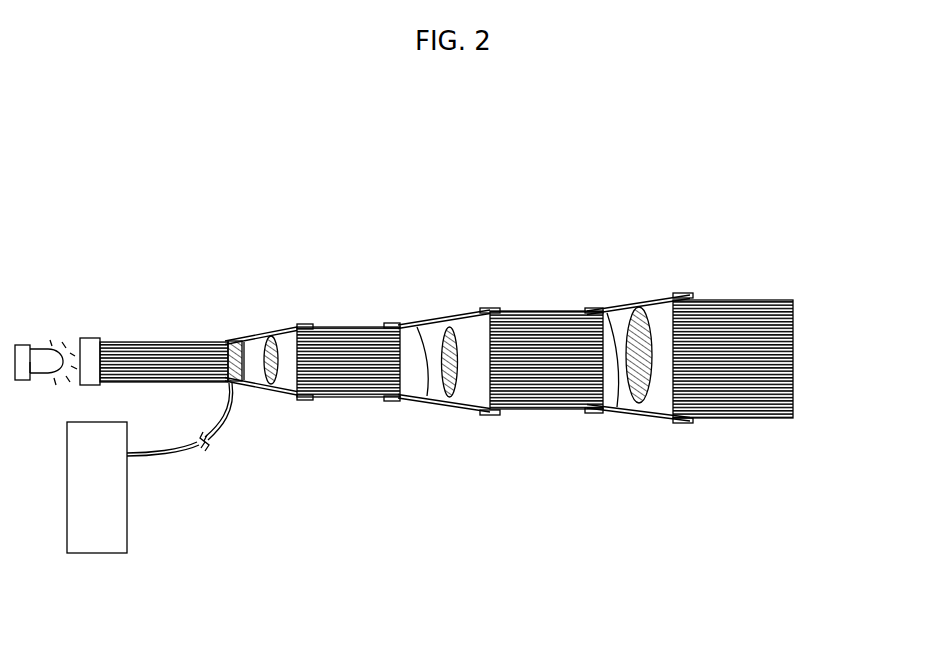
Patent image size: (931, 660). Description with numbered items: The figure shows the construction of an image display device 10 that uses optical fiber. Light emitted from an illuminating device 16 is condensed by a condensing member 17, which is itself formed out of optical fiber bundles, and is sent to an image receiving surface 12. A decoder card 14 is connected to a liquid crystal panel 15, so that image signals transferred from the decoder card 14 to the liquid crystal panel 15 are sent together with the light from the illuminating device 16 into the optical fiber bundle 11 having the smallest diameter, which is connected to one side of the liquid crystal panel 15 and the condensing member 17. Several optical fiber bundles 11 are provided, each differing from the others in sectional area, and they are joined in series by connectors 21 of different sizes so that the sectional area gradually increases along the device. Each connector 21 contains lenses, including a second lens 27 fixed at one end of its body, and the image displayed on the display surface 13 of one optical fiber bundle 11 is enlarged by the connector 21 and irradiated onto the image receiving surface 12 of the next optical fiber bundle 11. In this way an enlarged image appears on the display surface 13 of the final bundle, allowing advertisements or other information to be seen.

The illumination system 10 is at (173, 499).
The optical fiber bundle 11 is at (170, 360).
The image receiving surface 12 is at (276, 388).
The display surface 13 is at (425, 328).
The decoder card 14 is at (74, 450).
The liquid crystal panel 15 is at (233, 340).
The illuminating device 16 is at (42, 351).
The condensing member 17 is at (120, 326).
The connector 21 is at (268, 326).
The second lens 27 is at (252, 383).